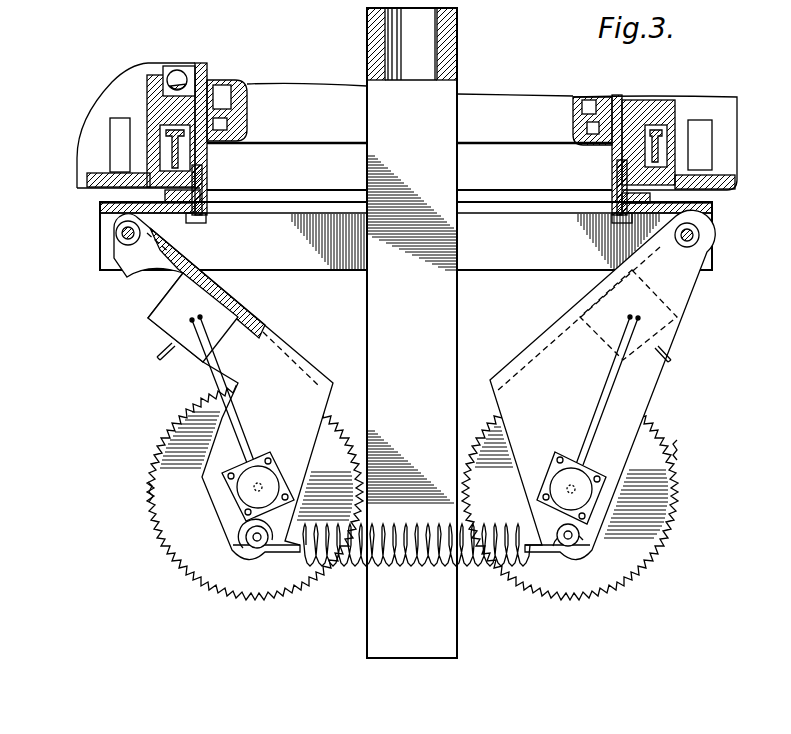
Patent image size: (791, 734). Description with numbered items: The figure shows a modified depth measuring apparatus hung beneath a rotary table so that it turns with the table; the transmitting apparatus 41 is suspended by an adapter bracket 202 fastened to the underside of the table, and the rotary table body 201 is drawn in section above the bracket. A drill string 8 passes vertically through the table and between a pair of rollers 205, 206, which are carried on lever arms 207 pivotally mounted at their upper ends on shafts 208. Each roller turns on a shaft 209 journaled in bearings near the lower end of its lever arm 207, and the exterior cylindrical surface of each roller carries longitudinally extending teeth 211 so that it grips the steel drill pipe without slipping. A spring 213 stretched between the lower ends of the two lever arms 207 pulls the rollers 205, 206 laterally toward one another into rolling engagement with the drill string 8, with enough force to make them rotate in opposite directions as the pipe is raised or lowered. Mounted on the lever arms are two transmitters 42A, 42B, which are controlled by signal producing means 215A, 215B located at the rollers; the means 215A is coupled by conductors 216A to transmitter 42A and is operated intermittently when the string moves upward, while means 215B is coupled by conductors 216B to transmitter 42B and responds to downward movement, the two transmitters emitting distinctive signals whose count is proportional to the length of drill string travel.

The drill string 8 is at (457, 61).
The sensing assembly 41 is at (704, 384).
The transmitter 42A is at (652, 289).
The transmitter 42B is at (167, 315).
The rotary table 201 is at (247, 109).
The adapter bracket 202 is at (292, 271).
The roller 205 is at (203, 222).
The roller 206 is at (168, 468).
The lever arm 207 is at (297, 352).
The shaft 208 is at (116, 233).
The shaft 209 is at (266, 488).
The teeth 211 is at (165, 437).
The spring 213 is at (348, 568).
The signal producing means 215A is at (592, 495).
The signal producing means 215B is at (234, 498).
The conductors 216A is at (613, 382).
The conductors 216B is at (233, 424).